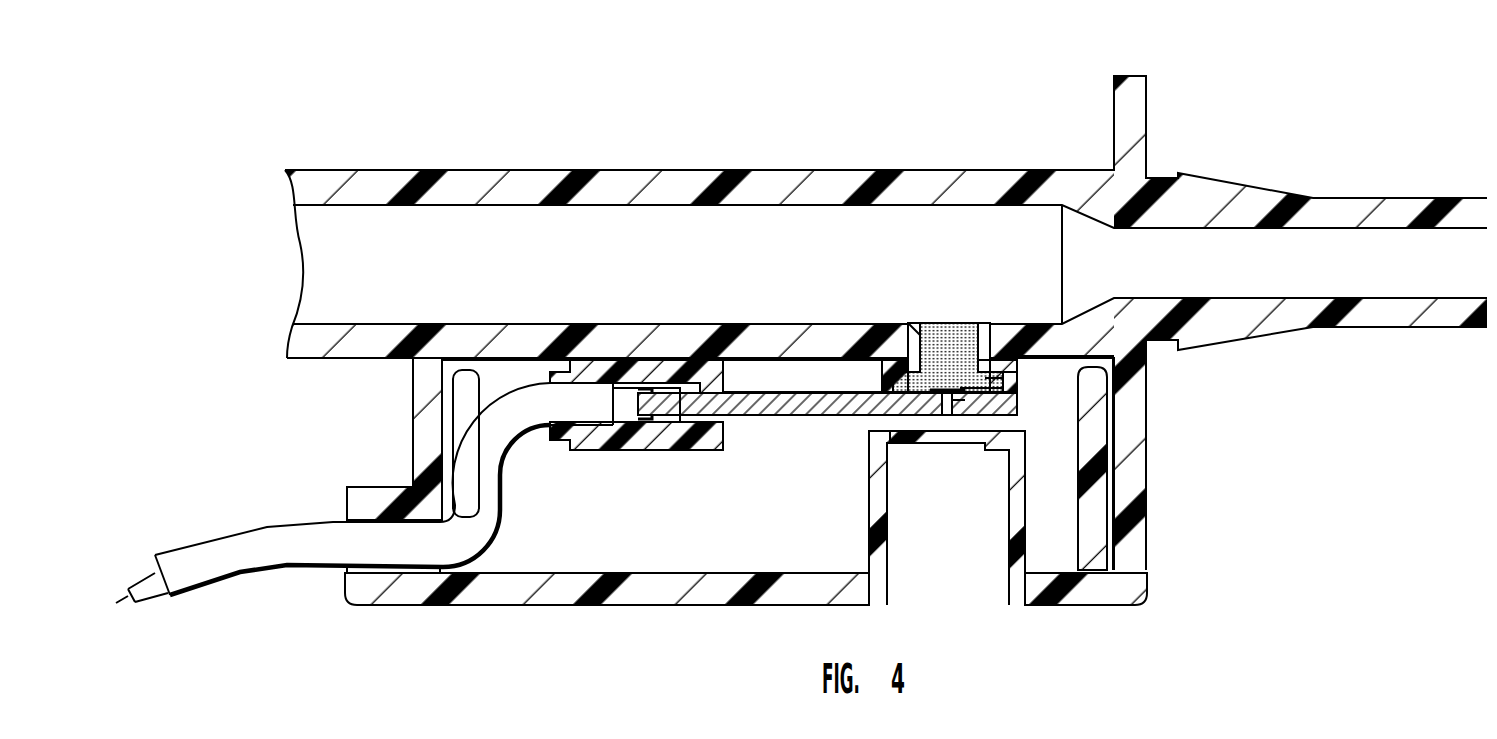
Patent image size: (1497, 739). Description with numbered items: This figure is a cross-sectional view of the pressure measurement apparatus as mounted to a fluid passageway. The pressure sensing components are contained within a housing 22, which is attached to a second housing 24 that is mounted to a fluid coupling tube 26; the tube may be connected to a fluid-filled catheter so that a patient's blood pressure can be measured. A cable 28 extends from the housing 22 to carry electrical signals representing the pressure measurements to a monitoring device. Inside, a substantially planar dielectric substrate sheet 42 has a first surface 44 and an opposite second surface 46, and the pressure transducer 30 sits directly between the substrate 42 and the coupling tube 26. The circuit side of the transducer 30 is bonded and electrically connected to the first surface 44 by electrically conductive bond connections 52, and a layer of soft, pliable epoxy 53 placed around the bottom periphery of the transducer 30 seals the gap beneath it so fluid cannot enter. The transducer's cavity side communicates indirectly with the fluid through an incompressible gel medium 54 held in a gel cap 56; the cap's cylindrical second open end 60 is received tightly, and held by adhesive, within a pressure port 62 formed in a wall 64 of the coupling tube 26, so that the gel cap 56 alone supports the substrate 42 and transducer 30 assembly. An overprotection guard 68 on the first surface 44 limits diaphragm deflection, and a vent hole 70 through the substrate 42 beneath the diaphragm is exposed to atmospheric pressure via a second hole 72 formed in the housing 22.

The housing 22 is at (604, 610).
The second housing 24 is at (410, 421).
The fluid coupling tube 26 is at (463, 170).
The cable 28 is at (255, 537).
The pressure transducer 30 is at (1008, 366).
The dielectric substrate sheet 42 is at (781, 423).
The first surface 44 is at (783, 393).
The second surface 46 is at (741, 418).
The electrically conductive bond connections 52 is at (985, 385).
The soft, pliable epoxy 53 is at (992, 373).
The incompressible gel medium 54 is at (937, 323).
The gel cap 56 is at (1020, 369).
The second open end 60 is at (985, 335).
The pressure port 62 is at (913, 340).
The wall 64 is at (767, 345).
The overprotection guard 68 is at (943, 398).
The vent hole 70 is at (958, 405).
The second hole 72 is at (891, 444).